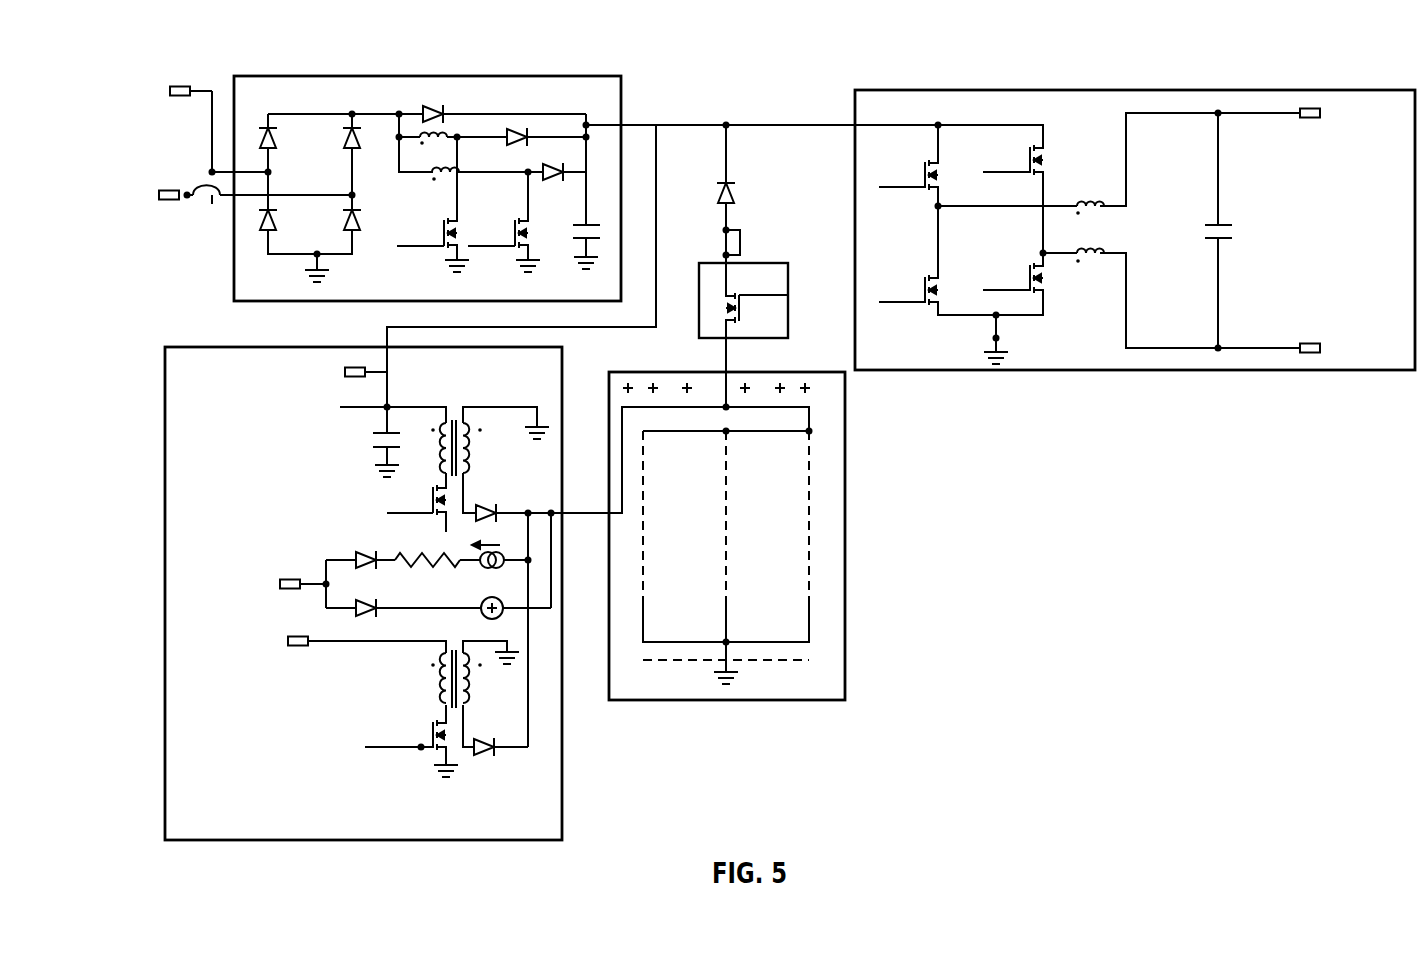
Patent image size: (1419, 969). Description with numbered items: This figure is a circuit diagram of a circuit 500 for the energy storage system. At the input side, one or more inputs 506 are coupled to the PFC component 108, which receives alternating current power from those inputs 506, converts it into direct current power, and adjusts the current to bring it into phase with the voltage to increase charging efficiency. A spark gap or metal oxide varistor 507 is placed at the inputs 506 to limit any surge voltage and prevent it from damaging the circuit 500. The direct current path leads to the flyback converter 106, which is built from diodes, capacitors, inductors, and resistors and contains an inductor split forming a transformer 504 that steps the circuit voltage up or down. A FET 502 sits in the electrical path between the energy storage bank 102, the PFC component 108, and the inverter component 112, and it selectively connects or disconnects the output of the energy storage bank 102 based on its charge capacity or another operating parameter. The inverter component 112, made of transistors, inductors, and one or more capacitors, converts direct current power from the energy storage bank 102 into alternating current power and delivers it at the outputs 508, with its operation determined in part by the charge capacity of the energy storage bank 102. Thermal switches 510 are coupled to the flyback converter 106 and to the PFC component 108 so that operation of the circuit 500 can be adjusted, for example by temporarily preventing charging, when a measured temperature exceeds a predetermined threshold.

The circuit 500 is at (174, 47).
The PFC component 108 is at (428, 75).
The inverter component 112 is at (1115, 88).
The flyback converter 106 is at (164, 575).
The energy storage bank 102 is at (845, 535).
The FET 502 is at (773, 262).
The transformer 504 is at (455, 418).
The inputs 506 is at (178, 97).
The spark gap or metal oxide varistor 507 is at (214, 212).
The outputs 508 is at (1310, 120).
The thermal switches 510 is at (442, 248).